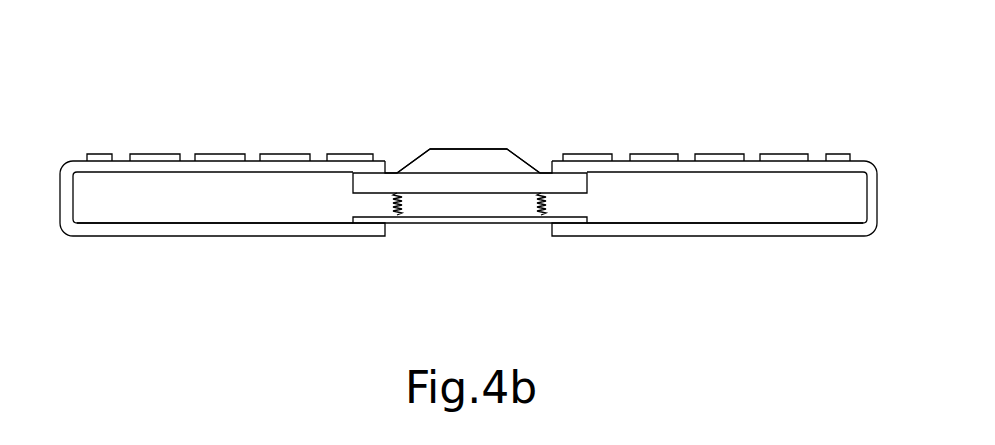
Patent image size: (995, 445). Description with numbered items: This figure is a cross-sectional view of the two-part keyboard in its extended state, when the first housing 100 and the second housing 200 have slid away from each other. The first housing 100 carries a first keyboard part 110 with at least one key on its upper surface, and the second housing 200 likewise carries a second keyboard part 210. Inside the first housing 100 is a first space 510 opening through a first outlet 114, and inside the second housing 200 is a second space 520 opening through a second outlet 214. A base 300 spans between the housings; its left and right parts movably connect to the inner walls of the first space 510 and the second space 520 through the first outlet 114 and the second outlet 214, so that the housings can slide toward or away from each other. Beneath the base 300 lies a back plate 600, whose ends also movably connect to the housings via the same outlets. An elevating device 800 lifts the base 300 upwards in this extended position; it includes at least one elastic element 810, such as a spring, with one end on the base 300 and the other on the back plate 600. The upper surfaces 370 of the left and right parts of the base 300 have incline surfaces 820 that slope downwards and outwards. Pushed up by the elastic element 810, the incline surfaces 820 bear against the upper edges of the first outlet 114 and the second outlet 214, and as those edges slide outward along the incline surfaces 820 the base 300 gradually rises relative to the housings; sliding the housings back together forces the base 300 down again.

The first housing 100 is at (233, 230).
The first keyboard part 110 is at (155, 157).
The first outlet 114 is at (375, 204).
The second housing 200 is at (877, 198).
The second keyboard part 210 is at (717, 160).
The second outlet 214 is at (577, 205).
The base 300 is at (437, 180).
The upper surfaces 370 is at (473, 148).
The first space 510 is at (135, 202).
The second space 520 is at (686, 213).
The back plate 600 is at (483, 217).
The elevating device 800 is at (502, 187).
The elastic element 810 is at (541, 216).
The incline surfaces 820 is at (415, 158).